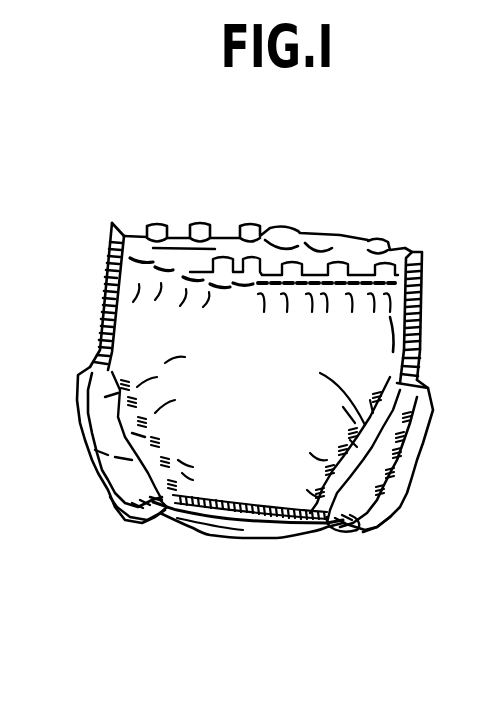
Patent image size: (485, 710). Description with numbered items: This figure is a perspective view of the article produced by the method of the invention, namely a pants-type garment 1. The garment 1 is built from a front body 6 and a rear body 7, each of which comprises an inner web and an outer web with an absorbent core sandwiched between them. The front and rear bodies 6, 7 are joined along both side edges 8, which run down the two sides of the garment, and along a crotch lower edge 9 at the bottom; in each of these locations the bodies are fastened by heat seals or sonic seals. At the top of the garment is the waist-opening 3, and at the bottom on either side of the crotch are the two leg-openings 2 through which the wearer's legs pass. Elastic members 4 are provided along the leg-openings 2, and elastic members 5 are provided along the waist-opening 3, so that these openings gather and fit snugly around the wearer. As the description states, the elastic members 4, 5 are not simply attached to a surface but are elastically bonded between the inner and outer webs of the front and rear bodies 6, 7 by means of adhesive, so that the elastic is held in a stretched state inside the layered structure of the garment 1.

The garment 1 is at (80, 311).
The leg-openings 2 is at (96, 497).
The waist-opening 3 is at (270, 236).
The elastic members 4 is at (163, 518).
The elastic members 5 is at (223, 234).
The front body 6 is at (256, 472).
The rear body 7 is at (327, 236).
The side edges 8 is at (108, 324).
The crotch lower edge 9 is at (294, 505).